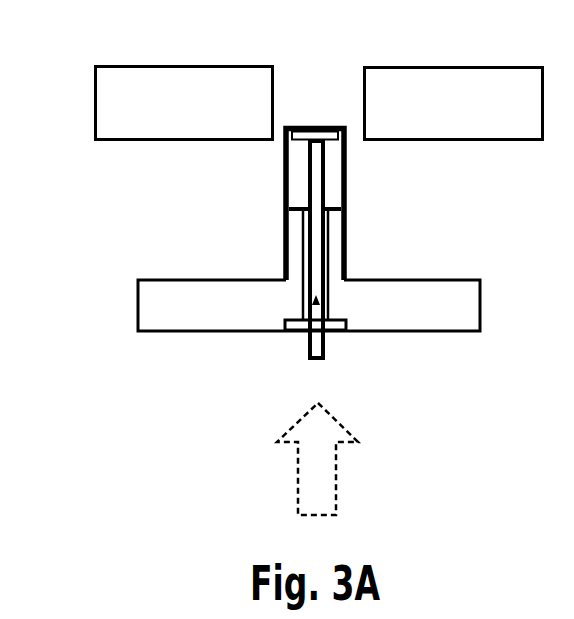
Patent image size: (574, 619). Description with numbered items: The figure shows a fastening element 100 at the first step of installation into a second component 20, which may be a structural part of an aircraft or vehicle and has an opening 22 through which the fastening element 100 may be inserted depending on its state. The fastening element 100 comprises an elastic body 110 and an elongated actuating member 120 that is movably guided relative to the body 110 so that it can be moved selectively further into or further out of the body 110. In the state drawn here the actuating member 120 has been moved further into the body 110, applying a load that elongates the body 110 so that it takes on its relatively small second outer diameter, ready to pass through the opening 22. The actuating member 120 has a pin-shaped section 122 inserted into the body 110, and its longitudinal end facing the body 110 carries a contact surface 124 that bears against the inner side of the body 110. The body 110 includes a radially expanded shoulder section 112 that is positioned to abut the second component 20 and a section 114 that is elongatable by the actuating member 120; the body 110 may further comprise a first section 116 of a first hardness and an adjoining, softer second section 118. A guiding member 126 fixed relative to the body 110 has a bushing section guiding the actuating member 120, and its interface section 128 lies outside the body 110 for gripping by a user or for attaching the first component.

The second component 20 is at (113, 118).
The opening 22 is at (365, 95).
The fastening element 100 is at (266, 219).
The body 110 is at (367, 200).
The shoulder section 112 is at (155, 312).
The section 114 is at (285, 185).
The first section 116 is at (337, 228).
The second section 118 is at (330, 170).
The actuating member 120 is at (316, 304).
The pin-shaped section 122 is at (333, 240).
The contact surface 124 is at (306, 128).
The guiding member 126 is at (283, 232).
The interface section 128 is at (335, 328).